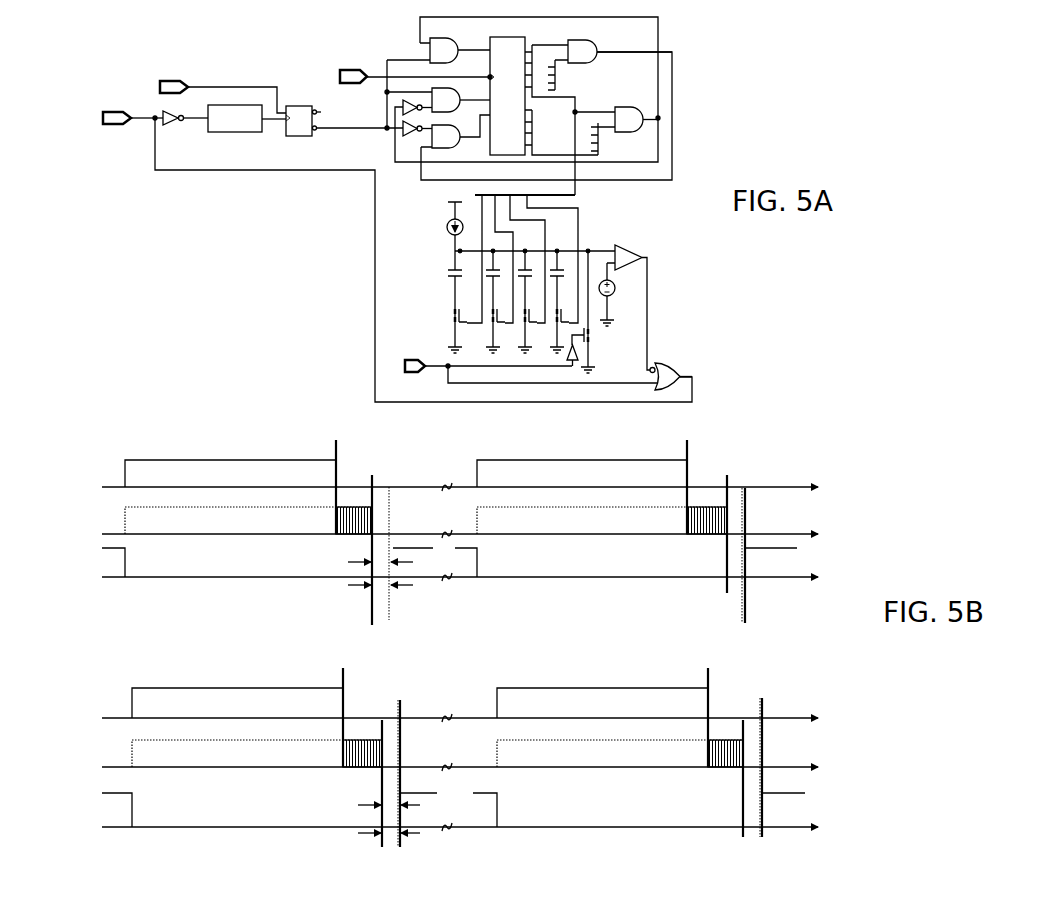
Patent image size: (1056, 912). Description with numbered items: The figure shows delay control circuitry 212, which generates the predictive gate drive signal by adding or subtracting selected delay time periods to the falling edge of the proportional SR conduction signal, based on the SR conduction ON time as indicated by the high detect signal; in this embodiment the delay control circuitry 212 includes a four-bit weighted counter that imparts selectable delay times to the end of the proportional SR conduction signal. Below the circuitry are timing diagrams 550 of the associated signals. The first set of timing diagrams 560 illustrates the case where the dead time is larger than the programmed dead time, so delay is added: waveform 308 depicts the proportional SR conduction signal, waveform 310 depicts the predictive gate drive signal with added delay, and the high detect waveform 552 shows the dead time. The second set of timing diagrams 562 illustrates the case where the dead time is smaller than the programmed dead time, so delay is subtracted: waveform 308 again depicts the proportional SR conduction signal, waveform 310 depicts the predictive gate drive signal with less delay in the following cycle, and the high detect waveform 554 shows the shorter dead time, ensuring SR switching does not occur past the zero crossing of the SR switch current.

In FIG. 5A, the delay control circuitry 212 is at (299, 47).
In FIG. 5B, the timing diagrams 550 is at (116, 406).
In FIG. 5B, the waveform 308 is at (812, 452).
In FIG. 5B, the waveform 310 is at (817, 512).
In FIG. 5B, the HD signal waveform case I 552 is at (812, 563).
In FIG. 5B, the HD signal waveform case II 554 is at (816, 810).
In FIG. 5B, the first set of timing diagrams 560 is at (935, 501).
In FIG. 5B, the second set of timing diagrams 562 is at (925, 739).